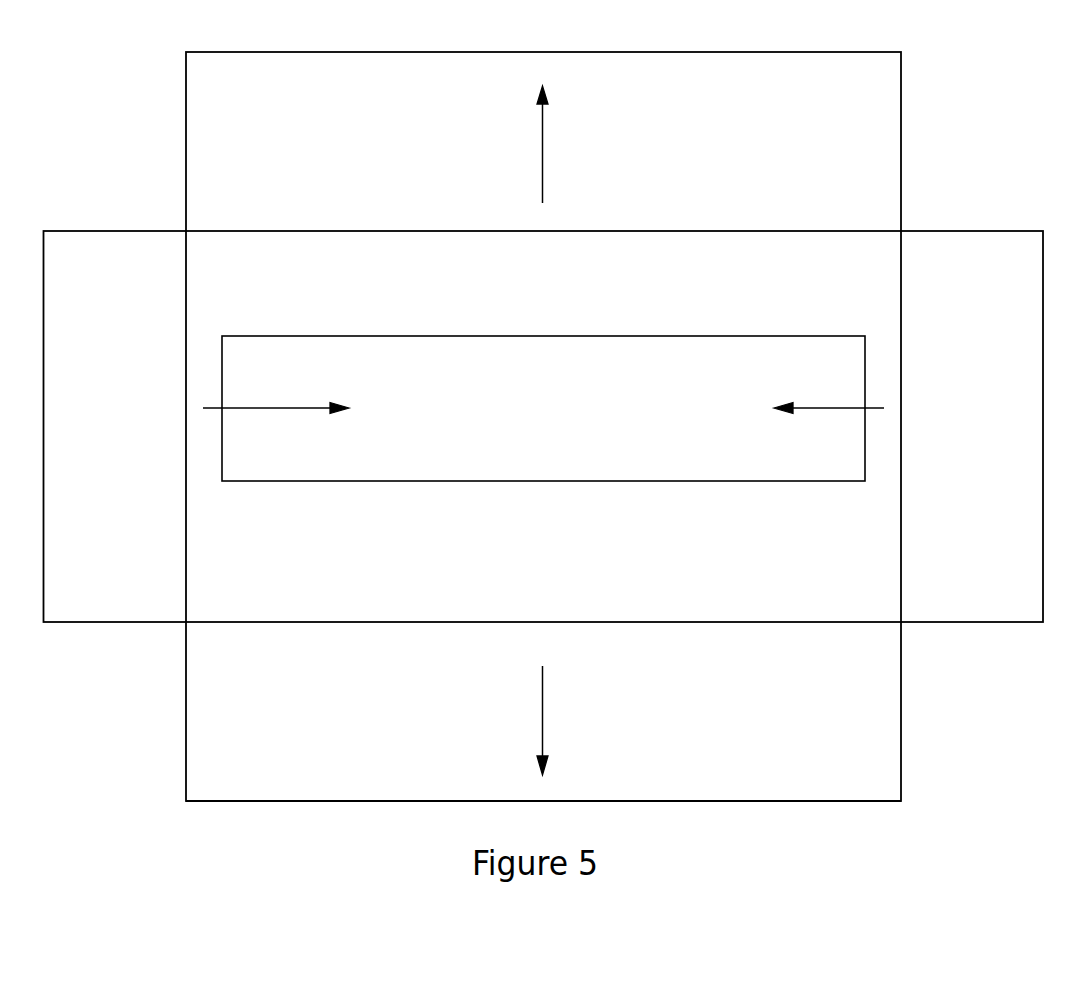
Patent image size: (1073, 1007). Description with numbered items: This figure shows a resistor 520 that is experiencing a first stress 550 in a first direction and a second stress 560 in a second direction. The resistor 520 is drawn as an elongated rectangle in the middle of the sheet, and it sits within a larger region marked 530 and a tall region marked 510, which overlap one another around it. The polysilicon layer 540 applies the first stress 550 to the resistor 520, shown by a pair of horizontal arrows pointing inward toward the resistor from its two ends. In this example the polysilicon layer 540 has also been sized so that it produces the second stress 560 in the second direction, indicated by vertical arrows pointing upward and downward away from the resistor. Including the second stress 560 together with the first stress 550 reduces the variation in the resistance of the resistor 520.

The p-type region 510 is at (618, 423).
The resistor 520 is at (543, 408).
The n-type region 530 is at (544, 426).
The polysilicon layer 540 is at (543, 785).
The first stress 550 is at (543, 387).
The second stress 560 is at (569, 430).